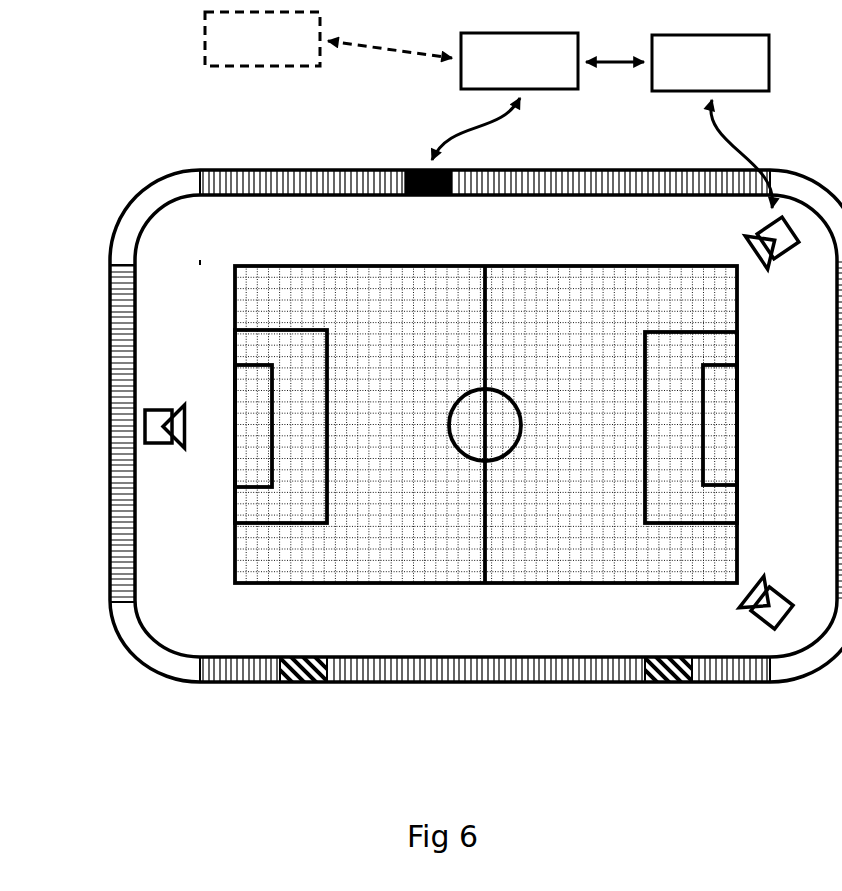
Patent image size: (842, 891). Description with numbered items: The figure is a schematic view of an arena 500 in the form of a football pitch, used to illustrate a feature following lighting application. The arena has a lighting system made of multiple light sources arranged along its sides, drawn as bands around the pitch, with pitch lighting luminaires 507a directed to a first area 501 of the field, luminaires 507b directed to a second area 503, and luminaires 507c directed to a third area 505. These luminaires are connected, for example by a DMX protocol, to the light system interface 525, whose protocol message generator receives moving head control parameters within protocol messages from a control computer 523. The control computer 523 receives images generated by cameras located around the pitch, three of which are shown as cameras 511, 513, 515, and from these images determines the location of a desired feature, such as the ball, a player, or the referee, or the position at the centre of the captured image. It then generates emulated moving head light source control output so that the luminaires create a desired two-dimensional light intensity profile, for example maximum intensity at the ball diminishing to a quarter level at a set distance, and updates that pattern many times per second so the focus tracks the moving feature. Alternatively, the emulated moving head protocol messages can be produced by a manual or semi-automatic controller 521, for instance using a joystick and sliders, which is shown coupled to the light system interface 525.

The arena 500 is at (130, 147).
The first area 501 is at (439, 318).
The second area 503 is at (320, 560).
The third area 505 is at (709, 578).
The luminaires 507a is at (529, 151).
The luminaires 507b is at (301, 704).
The luminaires 507c is at (655, 706).
The camera 511 is at (183, 459).
The camera 513 is at (784, 271).
The camera 515 is at (782, 577).
The manual or semi-automatic controller 521 is at (328, 39).
The control computer 523 is at (712, 121).
The light system interface 525 is at (538, 96).